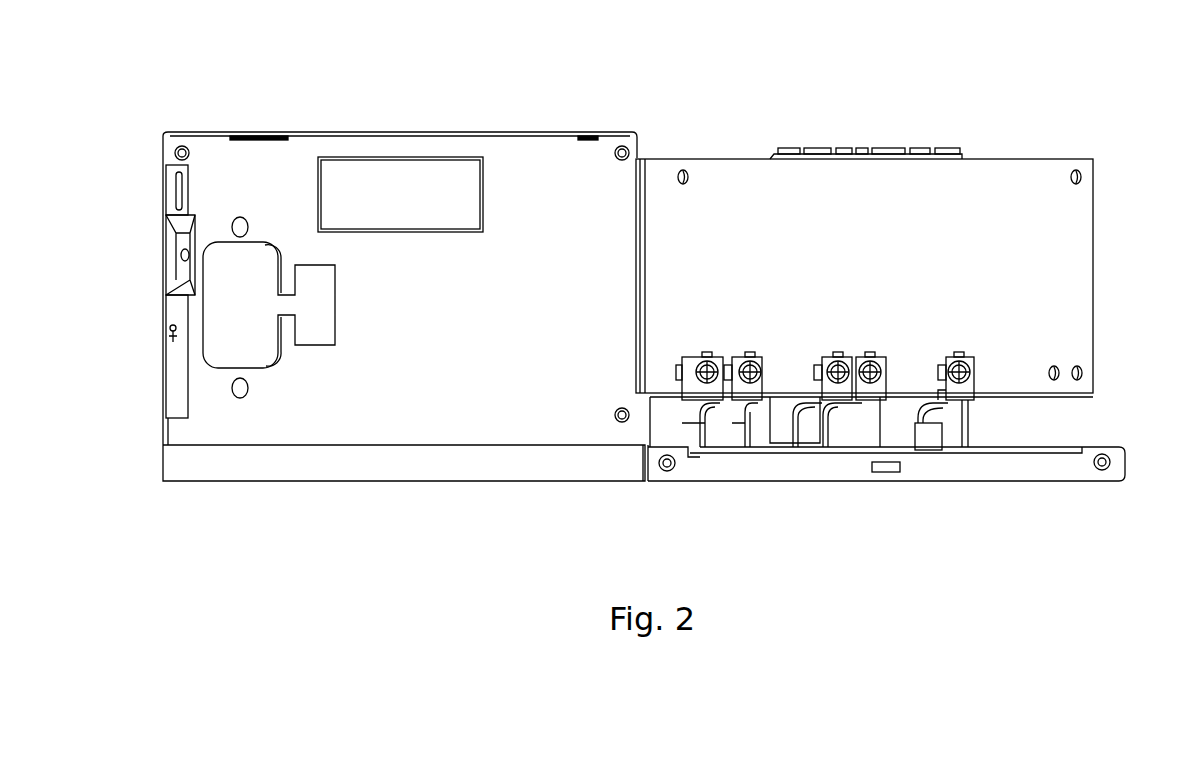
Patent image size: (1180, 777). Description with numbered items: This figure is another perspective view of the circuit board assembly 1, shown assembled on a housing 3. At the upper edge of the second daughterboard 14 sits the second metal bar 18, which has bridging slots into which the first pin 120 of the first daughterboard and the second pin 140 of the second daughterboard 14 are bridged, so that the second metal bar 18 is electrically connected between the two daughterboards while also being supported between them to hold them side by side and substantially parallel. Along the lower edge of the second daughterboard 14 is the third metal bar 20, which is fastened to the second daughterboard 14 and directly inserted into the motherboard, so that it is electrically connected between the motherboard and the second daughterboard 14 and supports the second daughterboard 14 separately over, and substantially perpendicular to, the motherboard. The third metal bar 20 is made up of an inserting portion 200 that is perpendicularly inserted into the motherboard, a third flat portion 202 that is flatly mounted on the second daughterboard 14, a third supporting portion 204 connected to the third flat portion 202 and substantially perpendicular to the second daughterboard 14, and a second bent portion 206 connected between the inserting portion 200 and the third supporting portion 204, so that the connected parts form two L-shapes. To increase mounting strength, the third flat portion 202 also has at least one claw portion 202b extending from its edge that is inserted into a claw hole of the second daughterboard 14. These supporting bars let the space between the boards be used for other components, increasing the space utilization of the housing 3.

The circuit board assembly 1 is at (652, 64).
The housing 3 is at (360, 131).
The second daughterboard 14 is at (1085, 267).
The second metal bar 18 is at (775, 152).
The first pin 120 is at (790, 150).
The second pin 140 is at (815, 150).
The third metal bar 20 is at (1085, 536).
The inserting portion 200 is at (930, 438).
The third flat portion 202 is at (980, 388).
The claw portion 202b is at (945, 373).
The third supporting portion 204 is at (945, 405).
The second bent portion 206 is at (935, 412).